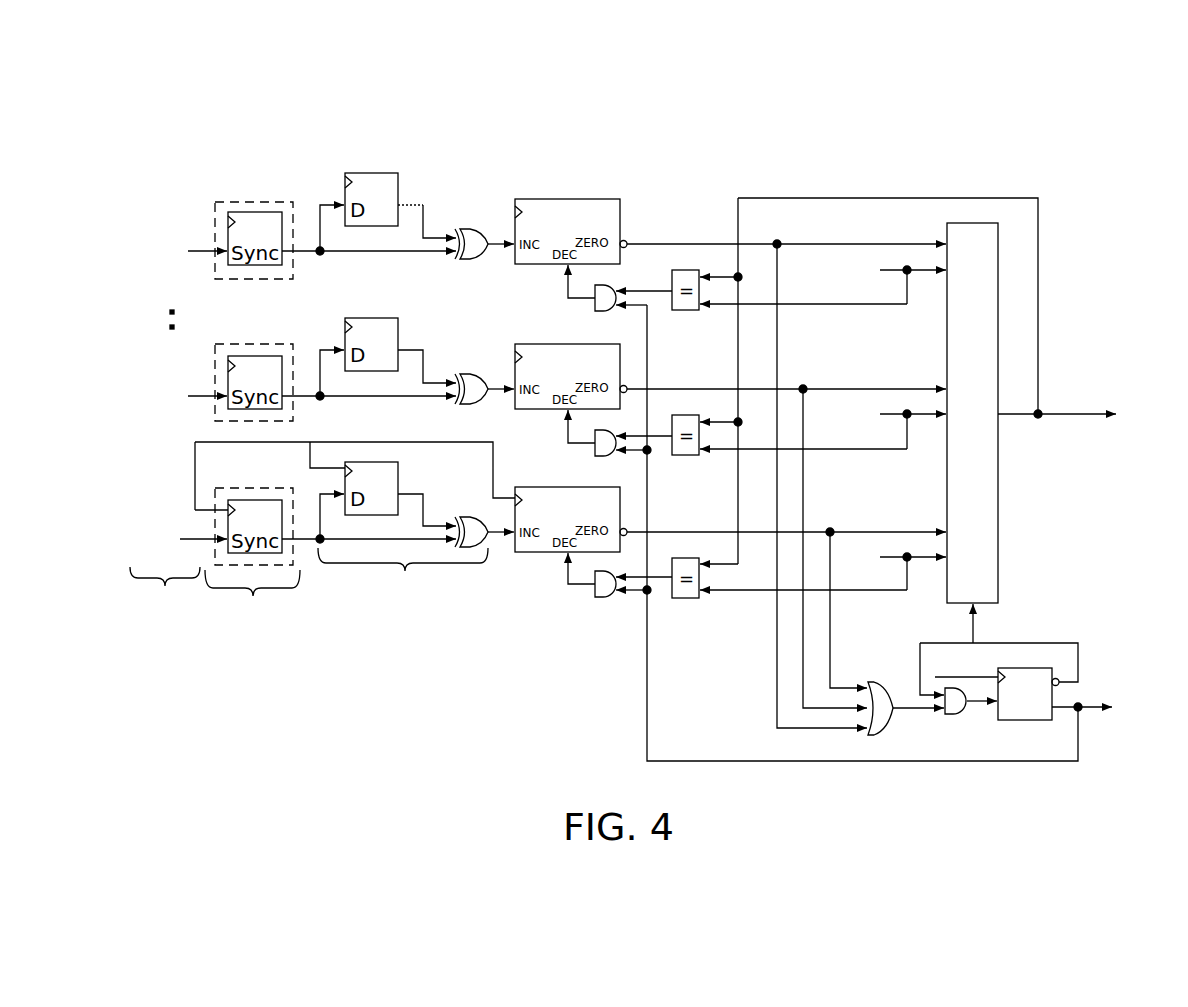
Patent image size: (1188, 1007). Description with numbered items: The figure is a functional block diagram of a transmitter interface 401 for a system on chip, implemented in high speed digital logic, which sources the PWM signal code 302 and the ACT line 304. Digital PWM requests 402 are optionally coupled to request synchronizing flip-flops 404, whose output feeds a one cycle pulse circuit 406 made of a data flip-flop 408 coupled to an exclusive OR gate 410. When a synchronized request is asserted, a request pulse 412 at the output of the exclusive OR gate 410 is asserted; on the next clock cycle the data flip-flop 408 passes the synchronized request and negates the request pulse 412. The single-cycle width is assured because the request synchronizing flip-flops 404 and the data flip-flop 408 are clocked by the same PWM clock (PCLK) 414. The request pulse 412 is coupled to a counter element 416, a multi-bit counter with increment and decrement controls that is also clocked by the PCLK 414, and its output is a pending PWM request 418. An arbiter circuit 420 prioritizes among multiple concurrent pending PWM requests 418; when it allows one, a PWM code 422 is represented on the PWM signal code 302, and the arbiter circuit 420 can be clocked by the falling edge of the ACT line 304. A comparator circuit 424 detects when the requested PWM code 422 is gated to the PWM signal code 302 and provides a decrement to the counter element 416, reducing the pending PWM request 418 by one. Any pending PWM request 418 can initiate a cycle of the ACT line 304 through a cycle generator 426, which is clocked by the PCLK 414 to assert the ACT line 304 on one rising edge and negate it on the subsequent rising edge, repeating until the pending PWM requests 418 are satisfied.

The transmitter interface 401 is at (298, 103).
The digital PWM requests 402 is at (165, 586).
The request synchronizing flip-flops 404 is at (253, 596).
The one cycle pulse circuit 406 is at (405, 566).
The data flip-flop 408 is at (392, 490).
The exclusive OR gate 410 is at (487, 525).
The request pulse 412 is at (500, 540).
The PWM clock (PCLK) 414 is at (378, 442).
The counter element 416 is at (592, 497).
The pending PWM request 418 is at (900, 530).
The arbiter circuit 420 is at (972, 413).
The PWM code 422 is at (898, 598).
The comparator circuit 424 is at (686, 598).
The cycle generator 426 is at (1042, 712).
The PWM signal code 302 is at (1057, 414).
The ACT line 304 is at (1097, 707).